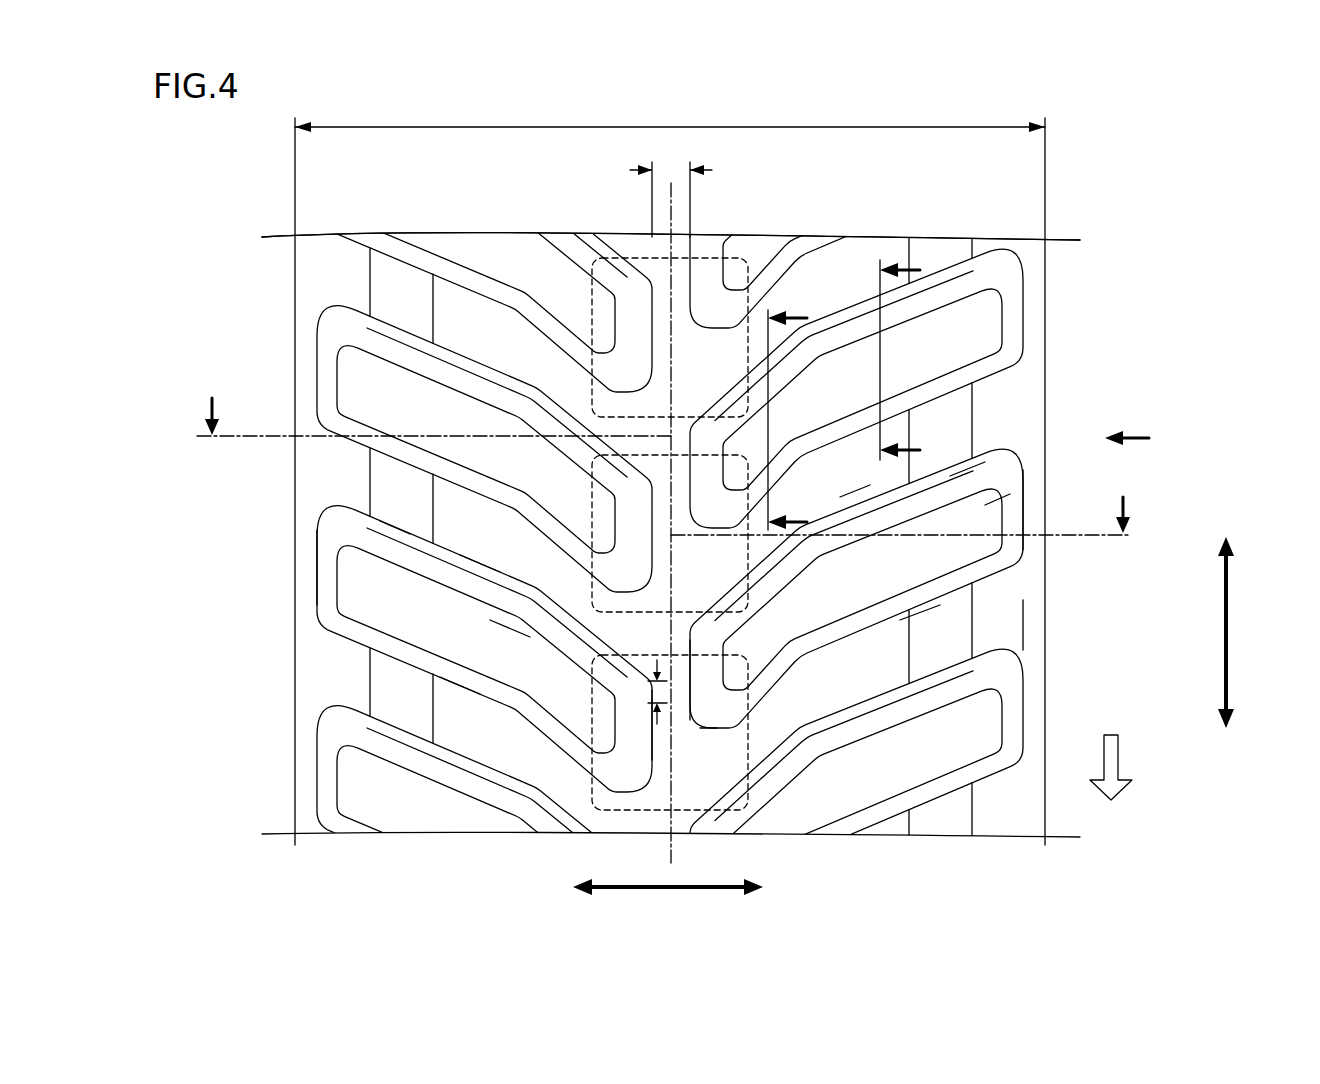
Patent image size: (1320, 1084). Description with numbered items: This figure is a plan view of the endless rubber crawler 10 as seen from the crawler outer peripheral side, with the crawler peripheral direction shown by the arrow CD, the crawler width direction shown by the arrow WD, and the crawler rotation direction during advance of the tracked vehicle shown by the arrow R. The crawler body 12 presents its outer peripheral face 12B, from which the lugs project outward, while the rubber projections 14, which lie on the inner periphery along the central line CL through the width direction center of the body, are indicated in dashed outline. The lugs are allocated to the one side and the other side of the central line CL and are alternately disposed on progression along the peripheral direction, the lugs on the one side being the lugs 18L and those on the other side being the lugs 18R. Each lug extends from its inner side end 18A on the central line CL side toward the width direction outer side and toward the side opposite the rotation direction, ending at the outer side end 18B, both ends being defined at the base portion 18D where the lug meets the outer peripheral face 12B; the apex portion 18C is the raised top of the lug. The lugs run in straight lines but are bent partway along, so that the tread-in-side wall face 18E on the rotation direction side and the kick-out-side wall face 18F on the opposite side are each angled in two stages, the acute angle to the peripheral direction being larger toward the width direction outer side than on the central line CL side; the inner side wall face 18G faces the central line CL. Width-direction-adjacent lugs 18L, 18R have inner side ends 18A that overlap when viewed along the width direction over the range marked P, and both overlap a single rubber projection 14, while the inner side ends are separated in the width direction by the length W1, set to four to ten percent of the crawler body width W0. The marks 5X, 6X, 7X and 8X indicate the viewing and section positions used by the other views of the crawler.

The rubber crawler 10 is at (194, 242).
The crawler body 12 is at (294, 339).
The outer peripheral face 12B is at (873, 652).
The rubber projection 14 is at (590, 785).
The lug 18L is at (310, 566).
The lug 18R is at (1027, 487).
The inner side end 18A is at (690, 640).
The outer side end 18B is at (318, 592).
The apex portion 18C is at (513, 647).
The base portion 18D is at (480, 562).
The tread-in-side wall face 18E is at (462, 680).
The kick-out-side wall face 18F is at (395, 536).
The inner side wall face 18G is at (700, 730).
The central line CL is at (672, 198).
The length along the crawler width direction of the crawler body W0 is at (670, 126).
The length along the crawler width direction between inner side ends W1 is at (671, 168).
The overlap range P is at (646, 693).
The crawler peripheral direction CD is at (1228, 633).
The crawler width direction WD is at (667, 890).
The crawler rotation direction R is at (1119, 757).
The view direction 5X is at (1144, 441).
The section line 6X is at (663, 466).
The section line 7X is at (793, 410).
The section line 8X is at (890, 355).